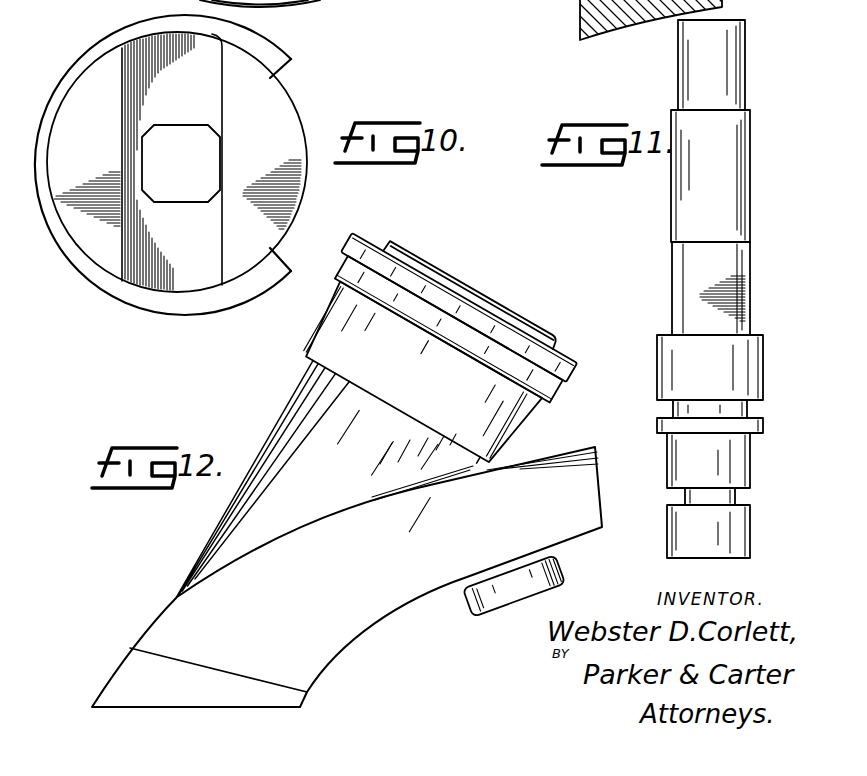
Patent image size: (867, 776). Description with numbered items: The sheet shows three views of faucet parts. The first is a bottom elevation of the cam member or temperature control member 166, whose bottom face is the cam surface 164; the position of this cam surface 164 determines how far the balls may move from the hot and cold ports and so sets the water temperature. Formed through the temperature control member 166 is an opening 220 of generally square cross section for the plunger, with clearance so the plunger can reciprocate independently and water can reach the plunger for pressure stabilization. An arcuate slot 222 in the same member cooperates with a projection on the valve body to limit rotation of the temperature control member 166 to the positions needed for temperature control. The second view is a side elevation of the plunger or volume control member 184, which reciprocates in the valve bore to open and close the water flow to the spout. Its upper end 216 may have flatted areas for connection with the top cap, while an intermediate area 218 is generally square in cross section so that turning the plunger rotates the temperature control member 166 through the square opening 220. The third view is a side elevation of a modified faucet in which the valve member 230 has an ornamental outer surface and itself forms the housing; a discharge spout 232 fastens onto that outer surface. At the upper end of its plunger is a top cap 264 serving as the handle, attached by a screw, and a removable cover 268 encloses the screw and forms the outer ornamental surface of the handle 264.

In FIG. 10, the cam surface 164 is at (180, 287).
In FIG. 10, the cam member or temperature control member 166 is at (90, 283).
In FIG. 10, the opening 220 is at (210, 172).
In FIG. 10, the arcuate slot 222 is at (297, 107).
In FIG. 11, the upper end of the plunger 216 is at (745, 77).
In FIG. 11, the plunger or volume control member 184 is at (748, 192).
In FIG. 11, the intermediate area 218 is at (728, 297).
In FIG. 12, the removable cover 268 is at (490, 298).
In FIG. 12, the top cap 264 is at (523, 420).
In FIG. 12, the valve member 230 is at (208, 540).
In FIG. 12, the discharge spout 232 is at (513, 610).